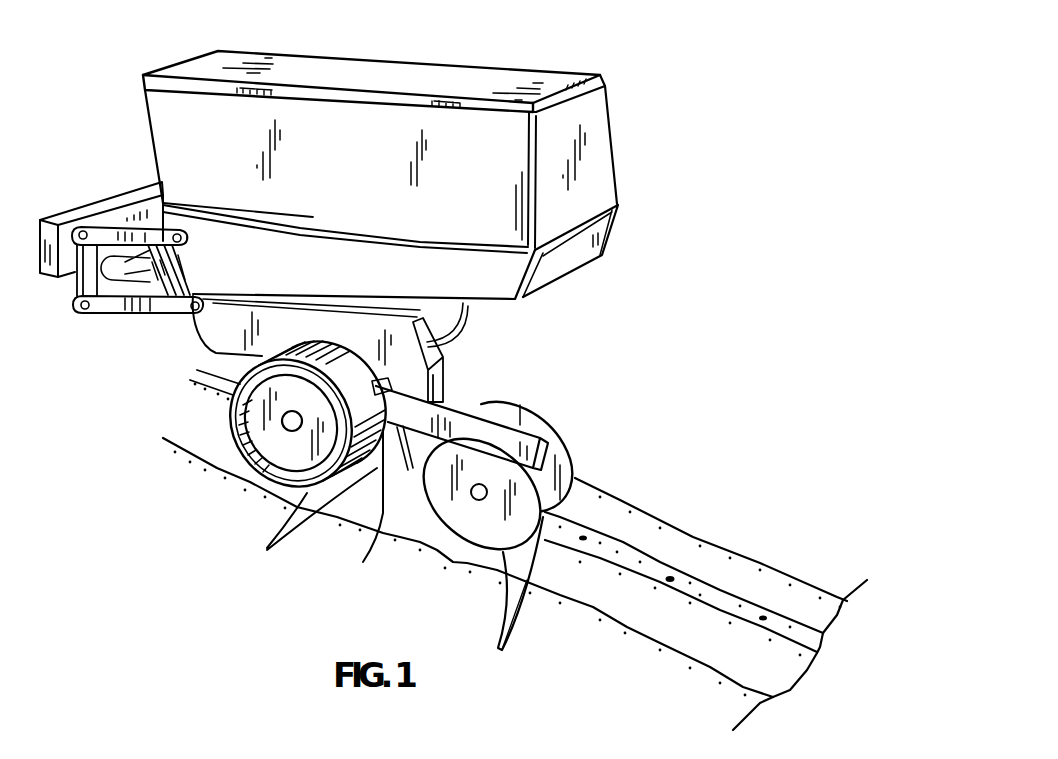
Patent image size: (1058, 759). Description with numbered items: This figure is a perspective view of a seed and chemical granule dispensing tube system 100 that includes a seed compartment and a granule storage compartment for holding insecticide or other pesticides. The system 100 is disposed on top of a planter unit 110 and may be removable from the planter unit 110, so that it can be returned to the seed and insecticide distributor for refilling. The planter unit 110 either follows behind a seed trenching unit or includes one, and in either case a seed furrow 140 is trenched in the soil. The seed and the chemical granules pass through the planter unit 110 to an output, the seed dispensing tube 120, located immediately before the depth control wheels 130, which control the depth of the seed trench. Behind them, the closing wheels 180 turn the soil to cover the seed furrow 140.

The seed and chemical granule dispensing tube system 100 is at (563, 65).
The planter unit 110 is at (611, 250).
The seed dispensing tube 120 is at (455, 513).
The depth control wheels 130 is at (296, 478).
The seed furrow 140 is at (627, 542).
The closing wheels 180 is at (504, 613).